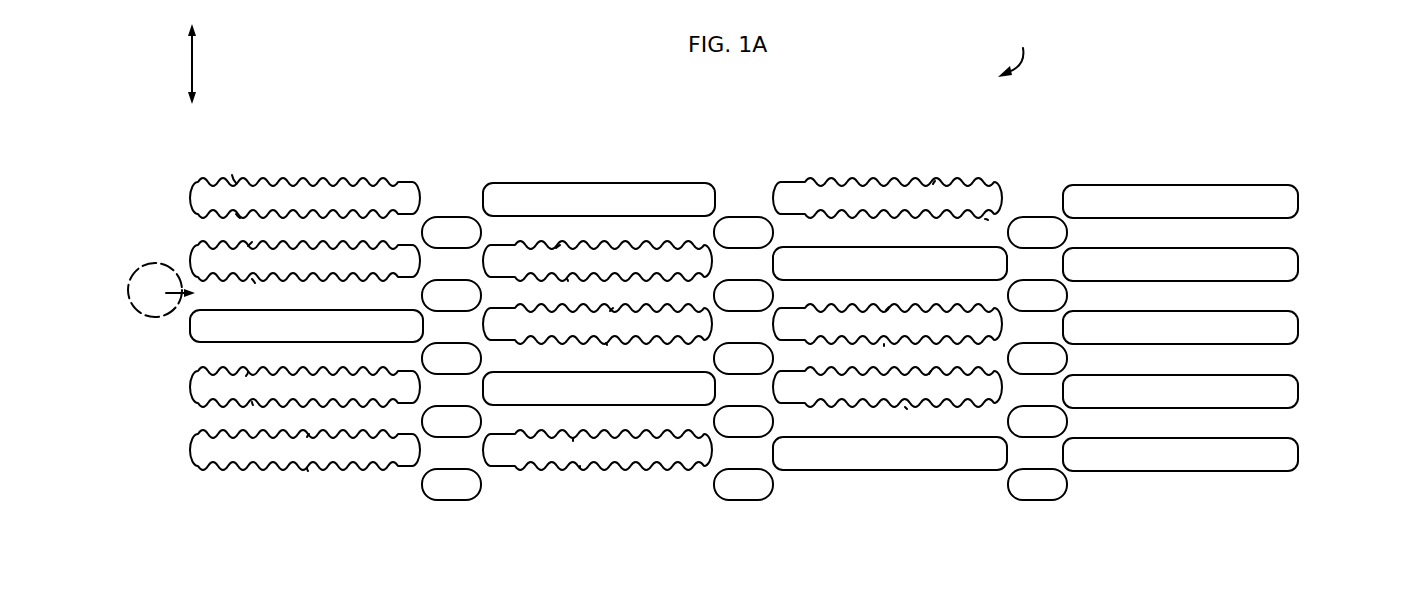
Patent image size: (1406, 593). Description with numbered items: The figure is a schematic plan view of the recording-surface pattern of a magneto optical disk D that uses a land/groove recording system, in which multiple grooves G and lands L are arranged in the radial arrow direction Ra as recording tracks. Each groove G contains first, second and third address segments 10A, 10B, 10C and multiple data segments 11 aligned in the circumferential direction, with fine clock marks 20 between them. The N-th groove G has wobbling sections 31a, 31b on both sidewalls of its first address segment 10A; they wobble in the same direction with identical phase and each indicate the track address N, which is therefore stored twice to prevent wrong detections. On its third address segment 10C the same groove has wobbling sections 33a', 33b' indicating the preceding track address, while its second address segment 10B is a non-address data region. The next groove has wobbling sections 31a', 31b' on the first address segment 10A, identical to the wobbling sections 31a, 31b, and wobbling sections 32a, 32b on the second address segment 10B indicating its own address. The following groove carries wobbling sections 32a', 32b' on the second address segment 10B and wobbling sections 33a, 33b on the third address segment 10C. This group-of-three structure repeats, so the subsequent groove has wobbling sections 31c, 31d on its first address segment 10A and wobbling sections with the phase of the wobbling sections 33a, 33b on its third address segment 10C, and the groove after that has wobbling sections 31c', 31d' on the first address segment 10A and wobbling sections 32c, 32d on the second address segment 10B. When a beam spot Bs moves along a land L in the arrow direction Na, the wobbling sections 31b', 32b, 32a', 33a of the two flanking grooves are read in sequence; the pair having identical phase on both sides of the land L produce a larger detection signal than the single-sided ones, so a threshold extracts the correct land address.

The first address segment 10A is at (288, 315).
The second address segment 10B is at (622, 255).
The third address segment 10C is at (875, 317).
The data segment 11 is at (1160, 262).
The fine clock mark 20 is at (448, 228).
The wobbling section 31a is at (228, 155).
The wobbling section 31b is at (185, 214).
The wobbling section 31a' is at (191, 240).
The wobbling section 31b' is at (233, 293).
The wobbling section 31c is at (278, 359).
The wobbling section 31d is at (280, 416).
The wobbling section 31c' is at (341, 421).
The wobbling section 31d' is at (338, 489).
The wobbling section 32a is at (587, 235).
The wobbling section 32b is at (593, 293).
The wobbling section 32a' is at (649, 297).
The wobbling section 32b' is at (636, 356).
The wobbling section 32c is at (573, 440).
The wobbling section 32d is at (580, 468).
The wobbling section 33a is at (916, 299).
The wobbling section 33b is at (909, 358).
The wobbling section 33a' is at (962, 249).
The wobbling section 33b' is at (976, 290).
The radial arrow direction Ra is at (206, 64).
The magneto optical disk D is at (1017, 50).
The track address N is at (170, 258).
The beam spot Bs is at (128, 290).
The arrow direction of beam spot movement Na is at (168, 285).
The groove G is at (1318, 202).
The land L is at (1318, 235).